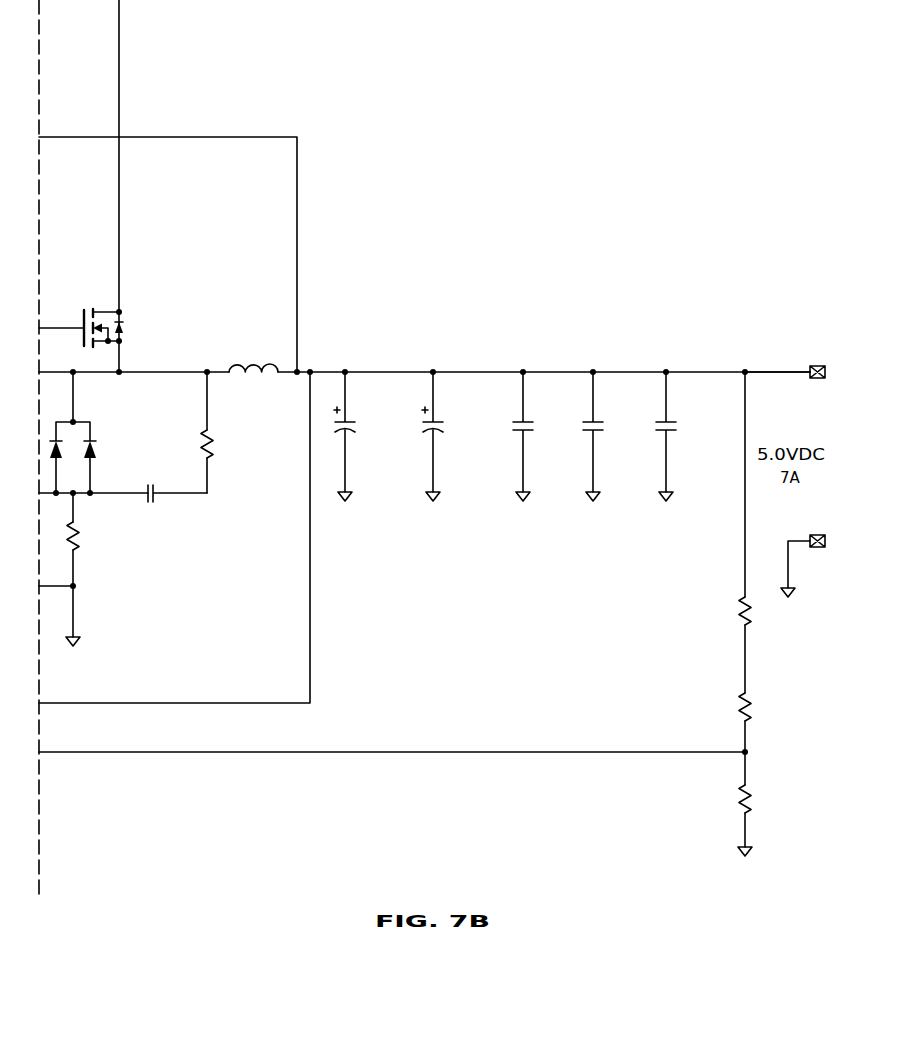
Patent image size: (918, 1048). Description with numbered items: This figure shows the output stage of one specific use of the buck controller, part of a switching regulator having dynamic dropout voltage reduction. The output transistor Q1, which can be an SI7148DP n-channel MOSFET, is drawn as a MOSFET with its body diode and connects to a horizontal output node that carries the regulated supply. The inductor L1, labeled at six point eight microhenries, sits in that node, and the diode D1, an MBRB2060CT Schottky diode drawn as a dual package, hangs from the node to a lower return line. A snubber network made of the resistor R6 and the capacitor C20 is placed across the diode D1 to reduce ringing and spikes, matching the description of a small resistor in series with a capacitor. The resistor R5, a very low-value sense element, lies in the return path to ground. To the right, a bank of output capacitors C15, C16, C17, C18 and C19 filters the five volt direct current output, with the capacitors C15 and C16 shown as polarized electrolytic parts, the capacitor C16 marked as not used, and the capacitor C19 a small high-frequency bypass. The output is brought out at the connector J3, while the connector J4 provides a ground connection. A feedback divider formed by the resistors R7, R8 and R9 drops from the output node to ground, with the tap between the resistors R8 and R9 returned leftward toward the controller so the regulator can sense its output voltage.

The MOSFET transistor SI7148DP Q1 is at (126, 309).
The inductor 6.8 uH L1 is at (253, 367).
The dual Schottky diode MBRB2060CT D1 is at (118, 434).
The capacitor 1000 pF C20 is at (188, 495).
The resistor 5.11 R6 is at (226, 432).
The sense resistor 0.010 R5 is at (83, 583).
The capacitor 470 uF C15 is at (367, 449).
The capacitor NU C16 is at (446, 449).
The capacitor 47 uF C17 is at (541, 449).
The capacitor 47 uF C18 is at (613, 449).
The capacitor 0.1 uF C19 is at (690, 449).
The connector 5.0VDC output J3 is at (785, 362).
The connector ground J4 is at (796, 579).
The resistor 10.0 R7 is at (724, 532).
The resistor 5.11k R8 is at (719, 721).
The resistor 1.62k R9 is at (726, 818).